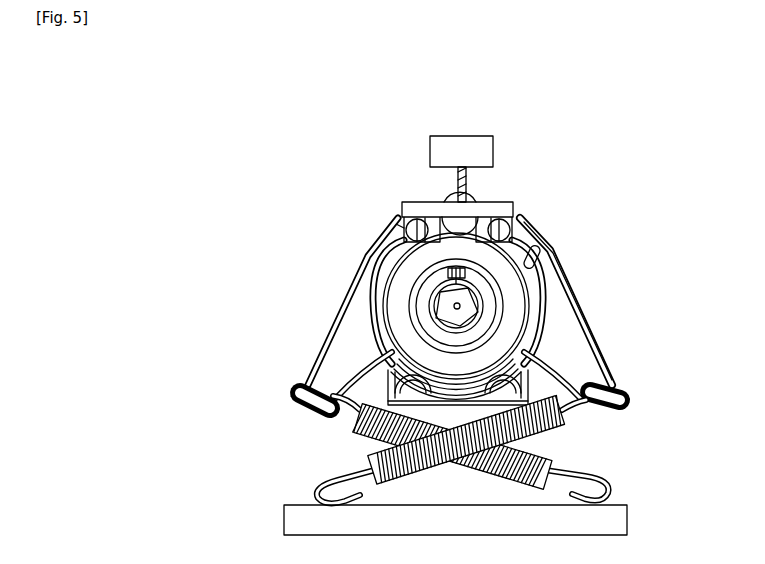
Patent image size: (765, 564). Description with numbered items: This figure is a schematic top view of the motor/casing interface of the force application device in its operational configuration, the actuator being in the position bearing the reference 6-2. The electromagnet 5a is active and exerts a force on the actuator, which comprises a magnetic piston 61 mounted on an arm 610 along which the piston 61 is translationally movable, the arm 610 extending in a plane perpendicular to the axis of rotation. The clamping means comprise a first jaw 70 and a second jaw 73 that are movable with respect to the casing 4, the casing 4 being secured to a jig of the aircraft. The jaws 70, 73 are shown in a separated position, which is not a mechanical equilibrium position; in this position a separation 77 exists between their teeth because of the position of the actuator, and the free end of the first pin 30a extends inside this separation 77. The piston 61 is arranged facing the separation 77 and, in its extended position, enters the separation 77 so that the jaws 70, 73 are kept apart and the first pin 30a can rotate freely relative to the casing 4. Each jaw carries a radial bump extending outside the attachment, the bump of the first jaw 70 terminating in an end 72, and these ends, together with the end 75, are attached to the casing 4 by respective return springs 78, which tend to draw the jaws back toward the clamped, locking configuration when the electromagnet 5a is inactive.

The operational position of the actuator 6-2 is at (418, 190).
The arm 610 is at (470, 180).
The electromagnet 5a is at (471, 160).
The first pin 30a is at (464, 214).
The magnetic piston 61 is at (518, 209).
The separation 77 is at (387, 212).
The second jaw 73 is at (338, 338).
The first jaw 70 is at (560, 340).
The left hook 75 is at (300, 406).
The end of the first jaw 72 is at (612, 397).
The spring 78 is at (538, 463).
The casing 4 is at (460, 529).